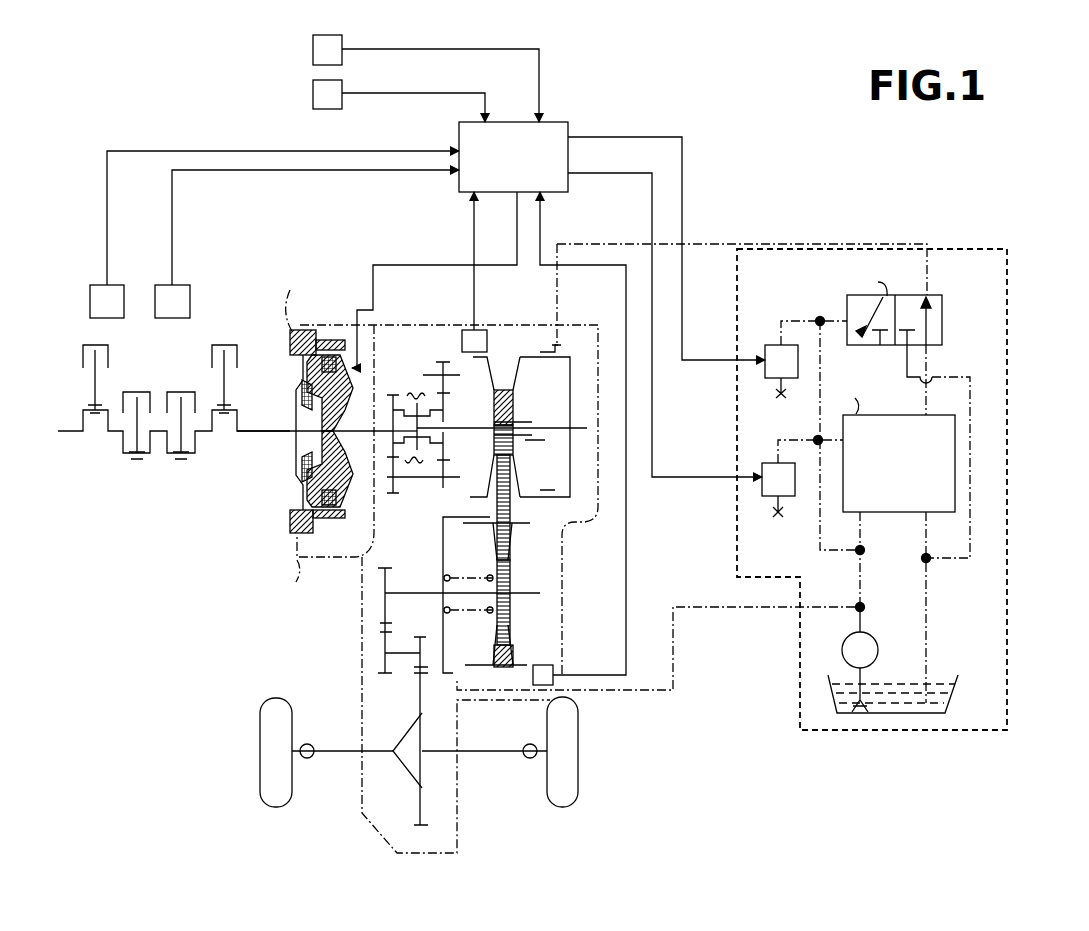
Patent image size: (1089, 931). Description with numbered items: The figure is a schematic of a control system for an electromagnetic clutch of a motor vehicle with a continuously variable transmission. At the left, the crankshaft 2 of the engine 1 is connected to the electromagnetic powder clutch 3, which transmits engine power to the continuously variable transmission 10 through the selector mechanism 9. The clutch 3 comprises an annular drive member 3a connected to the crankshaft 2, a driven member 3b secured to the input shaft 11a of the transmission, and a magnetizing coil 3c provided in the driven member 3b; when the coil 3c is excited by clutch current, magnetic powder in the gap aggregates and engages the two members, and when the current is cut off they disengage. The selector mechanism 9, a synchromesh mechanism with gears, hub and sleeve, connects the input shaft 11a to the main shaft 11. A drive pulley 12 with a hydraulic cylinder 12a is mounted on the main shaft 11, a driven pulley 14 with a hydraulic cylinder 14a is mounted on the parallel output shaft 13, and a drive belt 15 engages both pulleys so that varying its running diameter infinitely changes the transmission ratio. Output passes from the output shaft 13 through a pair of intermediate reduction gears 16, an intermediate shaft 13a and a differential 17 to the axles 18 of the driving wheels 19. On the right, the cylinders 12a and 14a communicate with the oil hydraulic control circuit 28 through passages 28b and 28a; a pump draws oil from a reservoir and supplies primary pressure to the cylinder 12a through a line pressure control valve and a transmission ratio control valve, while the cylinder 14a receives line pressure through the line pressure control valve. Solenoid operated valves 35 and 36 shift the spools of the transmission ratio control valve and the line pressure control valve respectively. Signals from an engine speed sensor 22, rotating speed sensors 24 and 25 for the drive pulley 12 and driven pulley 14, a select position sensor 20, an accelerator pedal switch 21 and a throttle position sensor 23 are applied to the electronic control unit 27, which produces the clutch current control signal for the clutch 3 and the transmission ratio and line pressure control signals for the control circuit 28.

The engine 1 is at (120, 458).
The crankshaft 2 is at (266, 430).
The electromagnetic powder clutch 3 is at (328, 410).
The drive member 3a is at (290, 522).
The driven member 3b is at (352, 410).
The magnetizing coil 3c is at (328, 355).
The selector mechanism 9 is at (412, 393).
The continuously variable transmission 10 is at (519, 411).
The main shaft 11 is at (470, 428).
The input shaft 11a is at (372, 431).
The drive pulley 12 is at (486, 362).
The hydraulic cylinder 12a is at (583, 474).
The output shaft 13 is at (413, 592).
The intermediate shaft 13a is at (404, 648).
The driven pulley 14 is at (495, 595).
The hydraulic cylinder 14a is at (490, 568).
The drive belt 15 is at (494, 505).
The intermediate reduction gears 16 is at (372, 628).
The differential 17 is at (408, 730).
The axles 18 is at (492, 750).
The driving wheels 19 is at (578, 748).
The select position sensor 20 is at (312, 50).
The accelerator pedal switch 21 is at (312, 94).
The engine speed sensor 22 is at (190, 298).
The throttle position sensor 23 is at (90, 300).
The rotating speed sensor 24 is at (488, 328).
The rotating speed sensor 25 is at (542, 665).
The electronic control unit 27 is at (556, 122).
The oil hydraulic control circuit 28 is at (761, 433).
The passage 28a is at (673, 668).
The passage 28b is at (606, 244).
The solenoid operated valve 35 is at (770, 345).
The solenoid operated valve 36 is at (764, 462).